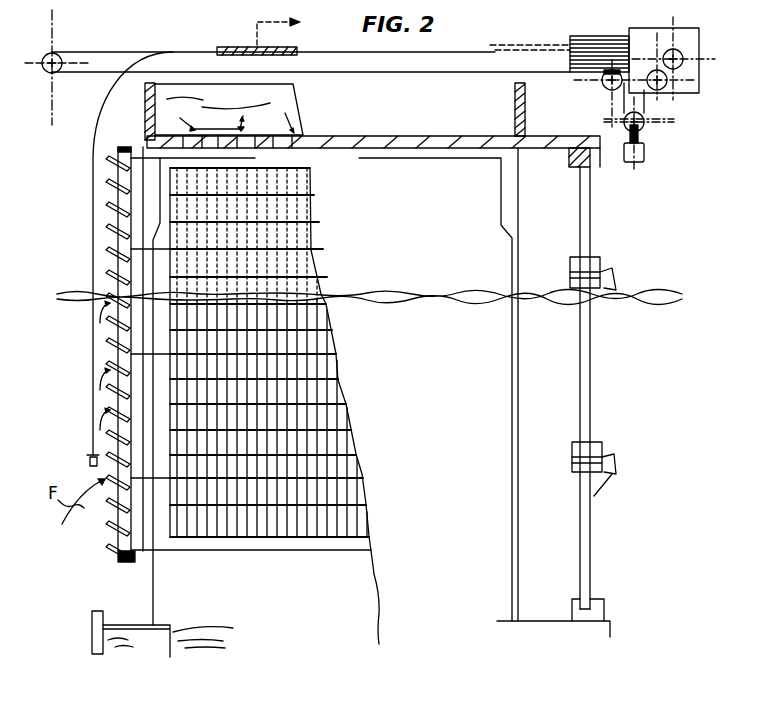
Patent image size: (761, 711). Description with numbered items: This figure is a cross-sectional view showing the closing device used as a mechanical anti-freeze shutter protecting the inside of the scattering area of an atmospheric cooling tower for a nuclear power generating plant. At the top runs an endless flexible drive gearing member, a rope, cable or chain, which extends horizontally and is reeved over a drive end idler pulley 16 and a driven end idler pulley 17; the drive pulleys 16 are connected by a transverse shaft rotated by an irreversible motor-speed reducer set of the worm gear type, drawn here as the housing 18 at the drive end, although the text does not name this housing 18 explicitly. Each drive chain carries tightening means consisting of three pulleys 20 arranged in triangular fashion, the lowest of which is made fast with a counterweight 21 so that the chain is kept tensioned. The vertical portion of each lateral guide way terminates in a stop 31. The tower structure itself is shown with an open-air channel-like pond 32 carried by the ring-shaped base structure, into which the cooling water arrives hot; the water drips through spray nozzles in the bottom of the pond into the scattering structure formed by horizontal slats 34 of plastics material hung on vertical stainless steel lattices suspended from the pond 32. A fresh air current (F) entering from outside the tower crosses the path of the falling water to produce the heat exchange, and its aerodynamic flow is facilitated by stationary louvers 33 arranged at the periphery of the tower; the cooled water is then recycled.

The drive end idler pulley 16 is at (680, 47).
The driven end idler pulley 17 is at (43, 73).
The gear housing 18 is at (668, 35).
The pulleys 20 is at (670, 92).
The counterweight 21 is at (640, 153).
The stop 31 is at (87, 465).
The open-air channel-like pond 32 is at (147, 117).
The stationary louvers 33 is at (93, 233).
The horizontal slats 34 is at (197, 248).